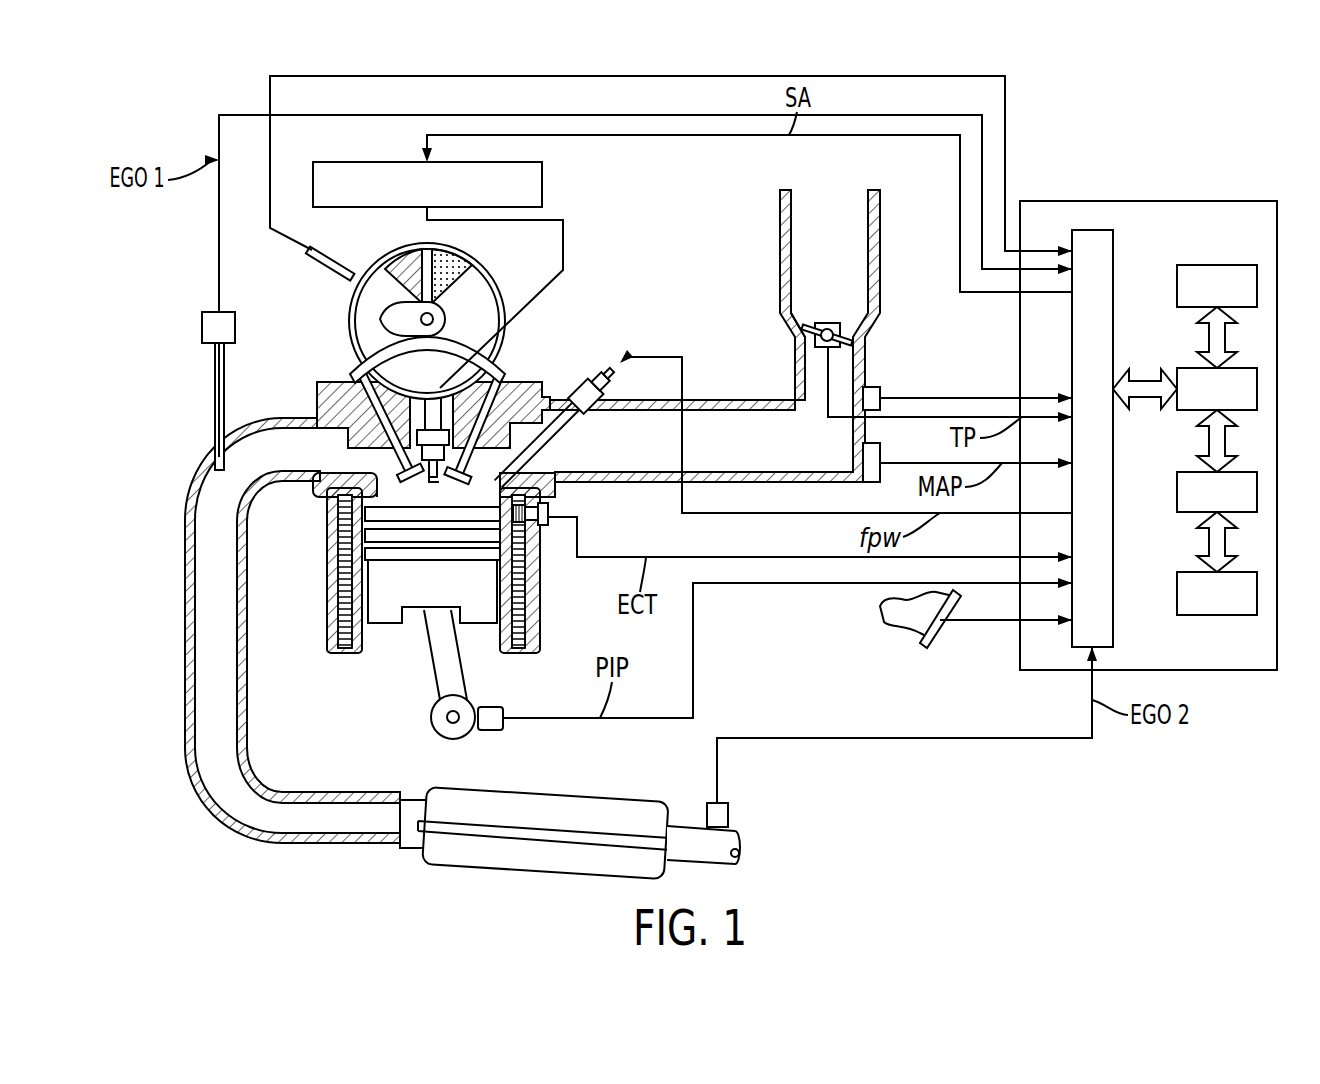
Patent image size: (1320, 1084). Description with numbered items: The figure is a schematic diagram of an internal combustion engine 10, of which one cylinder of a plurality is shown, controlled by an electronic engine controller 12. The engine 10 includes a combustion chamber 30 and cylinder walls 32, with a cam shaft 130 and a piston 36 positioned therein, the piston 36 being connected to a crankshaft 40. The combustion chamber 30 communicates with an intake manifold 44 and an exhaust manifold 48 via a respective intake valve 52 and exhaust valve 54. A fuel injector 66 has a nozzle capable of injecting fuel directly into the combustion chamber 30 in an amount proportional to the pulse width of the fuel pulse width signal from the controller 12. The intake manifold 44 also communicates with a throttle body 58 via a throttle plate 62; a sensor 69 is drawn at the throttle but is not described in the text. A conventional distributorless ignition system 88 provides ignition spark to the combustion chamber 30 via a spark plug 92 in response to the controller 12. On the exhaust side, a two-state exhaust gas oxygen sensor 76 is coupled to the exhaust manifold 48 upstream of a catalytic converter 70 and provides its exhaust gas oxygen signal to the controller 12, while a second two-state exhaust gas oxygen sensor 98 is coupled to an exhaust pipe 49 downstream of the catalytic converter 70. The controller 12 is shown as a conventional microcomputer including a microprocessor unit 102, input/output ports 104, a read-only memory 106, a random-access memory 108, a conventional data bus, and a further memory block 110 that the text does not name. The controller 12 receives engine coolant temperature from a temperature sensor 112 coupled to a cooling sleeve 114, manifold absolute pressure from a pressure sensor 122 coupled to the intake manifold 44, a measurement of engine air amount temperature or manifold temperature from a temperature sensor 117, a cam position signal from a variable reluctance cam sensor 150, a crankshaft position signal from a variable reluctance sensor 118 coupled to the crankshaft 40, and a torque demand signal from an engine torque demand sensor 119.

The internal combustion engine 10 is at (542, 321).
The electronic engine controller 12 is at (1140, 201).
The combustion chamber 30 is at (365, 498).
The cylinder walls 32 is at (365, 650).
The piston 36 is at (440, 592).
The crankshaft 40 is at (431, 719).
The intake manifold 44 is at (715, 336).
The exhaust manifold 48 is at (210, 490).
The exhaust pipe 49 is at (715, 855).
The intake valve 52 is at (505, 381).
The exhaust valve 54 is at (365, 380).
The throttle body 58 is at (810, 383).
The throttle plate 62 is at (808, 318).
The fuel injector 66 is at (582, 412).
The throttle position sensor 69 is at (840, 345).
The catalytic converter 70 is at (528, 788).
The two-state exhaust gas oxygen sensor 76 is at (202, 326).
The distributorless ignition system 88 is at (345, 162).
The spark plug 92 is at (433, 396).
The two-state exhaust gas oxygen sensor 98 is at (700, 792).
The microprocessor unit 102 is at (1177, 368).
The input/output ports 104 is at (1113, 257).
The read-only memory 106 is at (1218, 265).
The random-access memory 108 is at (1177, 472).
The keep alive memory (KAM) 110 is at (1177, 572).
The temperature sensor 112 is at (550, 506).
The cooling sleeve 114 is at (330, 660).
The temperature sensor 117 is at (893, 389).
The variable reluctance sensor 118 is at (503, 707).
The engine torque demand sensor 119 is at (953, 644).
The pressure sensor 122 is at (882, 452).
The cam shaft 130 is at (382, 318).
The variable reluctance cam sensor 150 is at (300, 263).